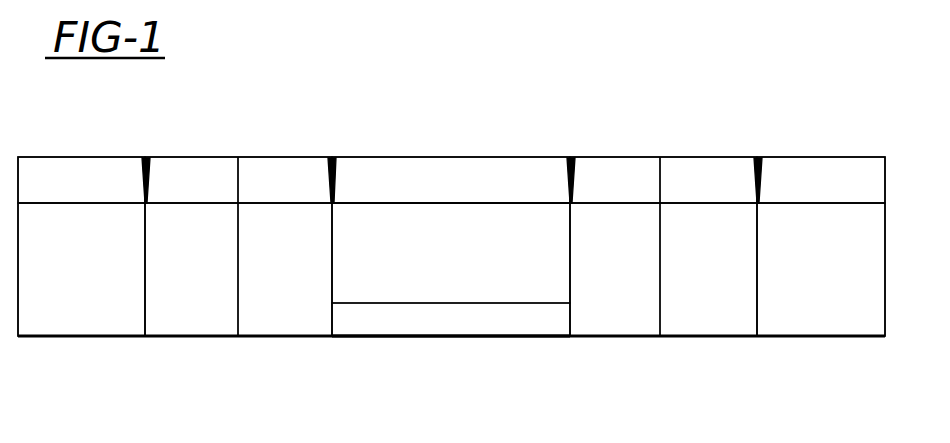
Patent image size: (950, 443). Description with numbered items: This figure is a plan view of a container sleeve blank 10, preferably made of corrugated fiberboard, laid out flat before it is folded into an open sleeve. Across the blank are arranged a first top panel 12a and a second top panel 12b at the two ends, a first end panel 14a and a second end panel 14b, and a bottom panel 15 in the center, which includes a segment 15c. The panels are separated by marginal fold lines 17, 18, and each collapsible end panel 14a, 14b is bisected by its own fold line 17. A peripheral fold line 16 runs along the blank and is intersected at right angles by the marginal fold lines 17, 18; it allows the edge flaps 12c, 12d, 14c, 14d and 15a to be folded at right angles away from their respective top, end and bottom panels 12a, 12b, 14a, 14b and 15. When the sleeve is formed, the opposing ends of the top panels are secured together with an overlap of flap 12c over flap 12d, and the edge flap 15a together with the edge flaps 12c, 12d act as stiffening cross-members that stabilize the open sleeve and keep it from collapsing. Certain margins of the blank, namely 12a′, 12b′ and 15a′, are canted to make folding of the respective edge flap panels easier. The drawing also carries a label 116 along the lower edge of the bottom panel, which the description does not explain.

The container sleeve blank 10 is at (887, 336).
The first top panel 12a is at (800, 262).
The canted margin 12a′ is at (757, 158).
The second top panel 12b is at (50, 262).
The canted margin 12b′ is at (147, 158).
The edge flap 12c is at (800, 194).
The edge flap 12d is at (52, 194).
The first end panel 14a is at (592, 262).
The second end panel 14b is at (170, 262).
The edge flap 14c is at (592, 194).
The edge flap 14d is at (170, 194).
The bottom panel 15 is at (440, 262).
The edge flap 15a is at (432, 194).
The canted margin 15a′ is at (332, 158).
The segment 15c is at (427, 330).
The peripheral fold line 16 is at (375, 204).
The marginal fold line 17 is at (240, 293).
The marginal fold line 18 is at (147, 293).
The bottom edge 116 is at (452, 337).